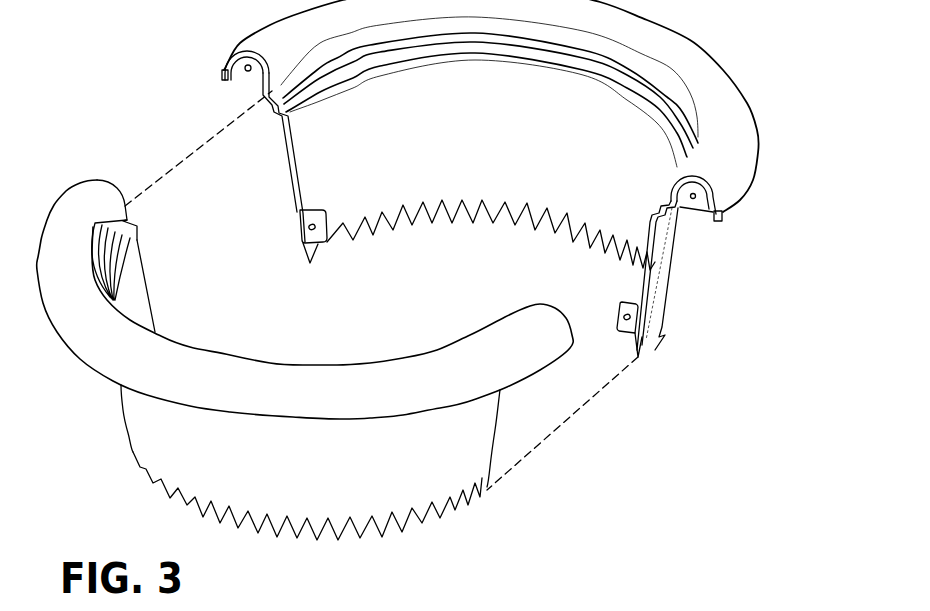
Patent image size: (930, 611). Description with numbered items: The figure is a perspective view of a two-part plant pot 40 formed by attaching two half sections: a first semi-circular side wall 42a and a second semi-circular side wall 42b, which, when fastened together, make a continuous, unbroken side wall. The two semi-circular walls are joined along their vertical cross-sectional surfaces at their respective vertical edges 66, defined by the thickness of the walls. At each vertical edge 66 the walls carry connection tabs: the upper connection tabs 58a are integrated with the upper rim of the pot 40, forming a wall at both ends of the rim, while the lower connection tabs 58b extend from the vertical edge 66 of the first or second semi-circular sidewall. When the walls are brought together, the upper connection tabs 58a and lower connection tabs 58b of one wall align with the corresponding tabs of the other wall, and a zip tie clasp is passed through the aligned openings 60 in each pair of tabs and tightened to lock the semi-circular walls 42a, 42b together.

The pot 40 is at (76, 96).
The first semi-circular side wall 42a is at (665, 242).
The second semi-circular side wall 42b is at (478, 458).
The upper connection tabs 58a is at (233, 72).
The lower connection tabs 58b is at (303, 230).
The openings 60 is at (247, 72).
The vertical edge 66 is at (645, 285).